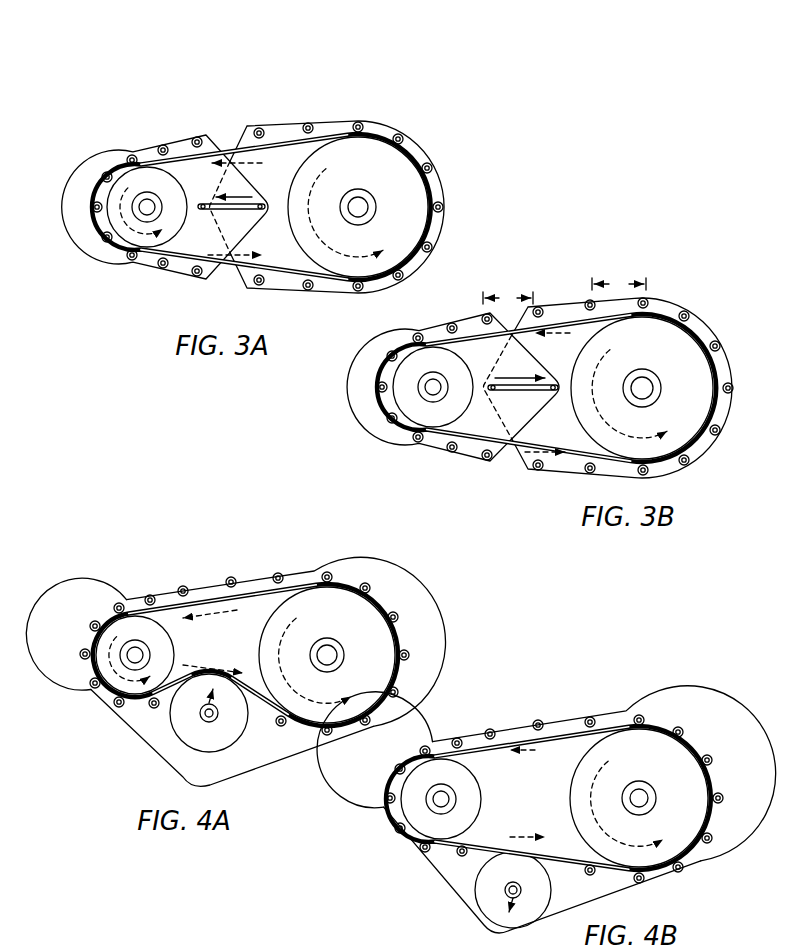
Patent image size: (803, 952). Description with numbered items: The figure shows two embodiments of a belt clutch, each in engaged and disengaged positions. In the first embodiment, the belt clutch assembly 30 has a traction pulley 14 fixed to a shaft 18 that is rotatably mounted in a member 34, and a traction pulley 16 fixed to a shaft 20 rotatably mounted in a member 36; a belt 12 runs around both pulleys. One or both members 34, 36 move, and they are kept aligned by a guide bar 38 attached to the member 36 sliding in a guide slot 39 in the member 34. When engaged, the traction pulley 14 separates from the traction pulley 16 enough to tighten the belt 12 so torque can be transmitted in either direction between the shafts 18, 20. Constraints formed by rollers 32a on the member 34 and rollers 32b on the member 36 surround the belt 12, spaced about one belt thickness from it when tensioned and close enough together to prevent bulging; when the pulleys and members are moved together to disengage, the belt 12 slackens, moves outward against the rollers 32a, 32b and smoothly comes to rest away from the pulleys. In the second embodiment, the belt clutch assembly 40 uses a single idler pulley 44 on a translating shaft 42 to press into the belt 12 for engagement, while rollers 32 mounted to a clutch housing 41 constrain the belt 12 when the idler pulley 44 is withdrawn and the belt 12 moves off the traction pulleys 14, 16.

In FIG. 3A, the belt 12 is at (285, 262).
In FIG. 3B, the belt 12 is at (585, 462).
In FIG. 4A, the belt 12 is at (260, 602).
In FIG. 4B, the belt 12 is at (570, 733).
In FIG. 3A, the traction pulley 14 is at (140, 186).
In FIG. 3B, the traction pulley 14 is at (423, 369).
In FIG. 4A, the traction pulley 14 is at (127, 634).
In FIG. 4B, the traction pulley 14 is at (433, 779).
In FIG. 3A, the traction pulley 16 is at (351, 167).
In FIG. 3B, the traction pulley 16 is at (635, 343).
In FIG. 4A, the traction pulley 16 is at (318, 616).
In FIG. 4B, the traction pulley 16 is at (633, 767).
In FIG. 3A, the shaft 18 is at (152, 211).
In FIG. 3B, the shaft 18 is at (439, 392).
In FIG. 4A, the shaft 18 is at (139, 659).
In FIG. 4B, the shaft 18 is at (446, 803).
In FIG. 3A, the shaft 20 is at (362, 211).
In FIG. 3B, the shaft 20 is at (647, 393).
In FIG. 4A, the shaft 20 is at (333, 660).
In FIG. 4B, the shaft 20 is at (645, 804).
In FIG. 3A, the belt clutch assembly 30 is at (227, 98).
In FIG. 3B, the belt clutch assembly 30 is at (612, 258).
In FIG. 4A, the rollers 32 is at (119, 602).
In FIG. 4B, the rollers 32 is at (554, 799).
In FIG. 3A, the rollers 32a is at (93, 204).
In FIG. 3A, the rollers 32b is at (263, 129).
In FIG. 3B, the rollers 32b is at (555, 386).
In FIG. 3A, the member 34 is at (189, 241).
In FIG. 3B, the member 34 is at (470, 431).
In FIG. 3A, the member 36 is at (267, 175).
In FIG. 3B, the member 36 is at (553, 356).
In FIG. 3B, the guide bar 38 is at (503, 392).
In FIG. 3B, the guide slot 39 is at (553, 392).
In FIG. 4A, the belt clutch assembly 40 is at (190, 523).
In FIG. 4B, the belt clutch assembly 40 is at (623, 680).
In FIG. 4A, the clutch housing 41 is at (198, 776).
In FIG. 4B, the clutch housing 41 is at (563, 899).
In FIG. 4A, the translating shaft 42 is at (217, 720).
In FIG. 4B, the translating shaft 42 is at (510, 895).
In FIG. 4A, the idler pulley 44 is at (181, 710).
In FIG. 4B, the idler pulley 44 is at (485, 887).